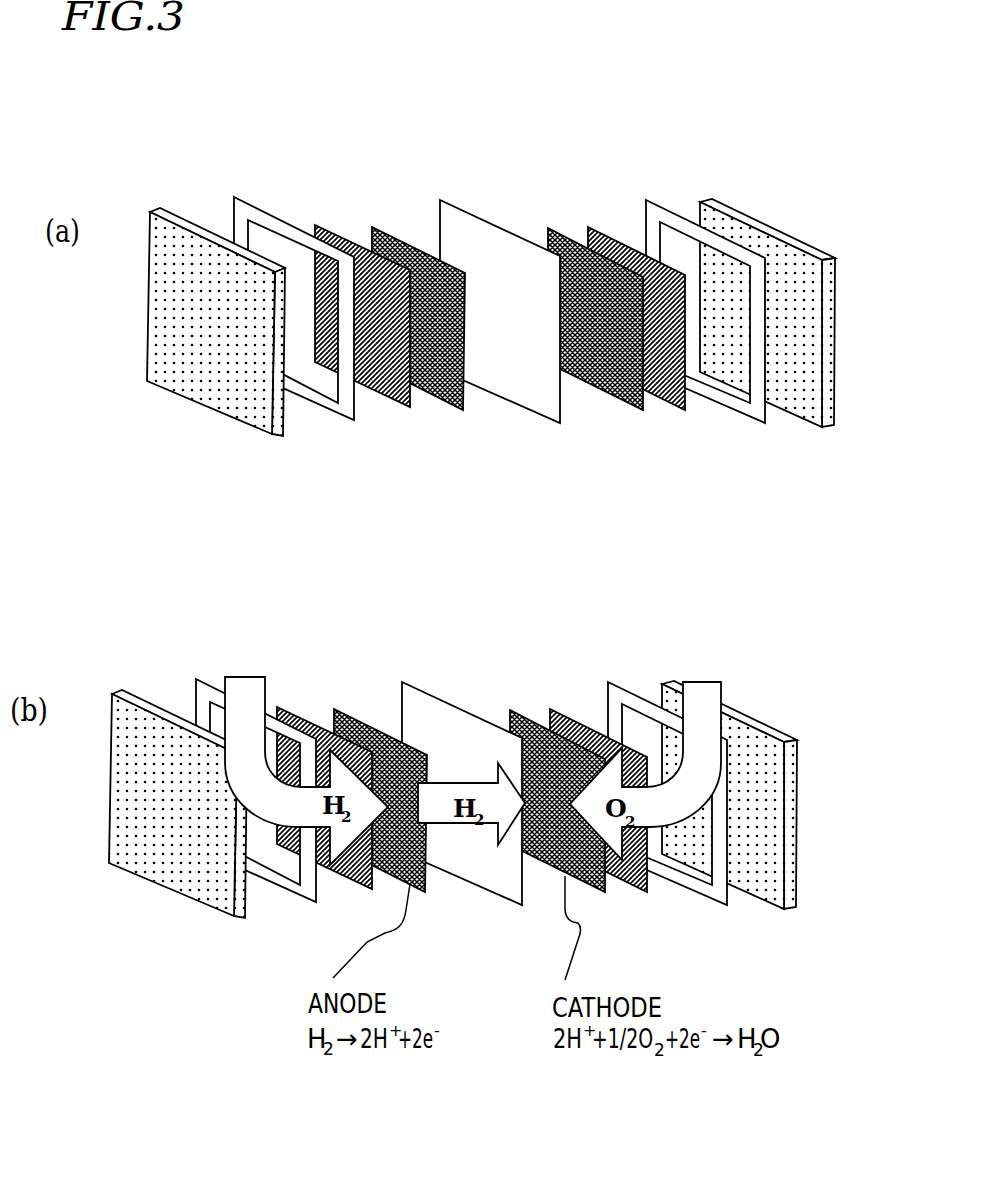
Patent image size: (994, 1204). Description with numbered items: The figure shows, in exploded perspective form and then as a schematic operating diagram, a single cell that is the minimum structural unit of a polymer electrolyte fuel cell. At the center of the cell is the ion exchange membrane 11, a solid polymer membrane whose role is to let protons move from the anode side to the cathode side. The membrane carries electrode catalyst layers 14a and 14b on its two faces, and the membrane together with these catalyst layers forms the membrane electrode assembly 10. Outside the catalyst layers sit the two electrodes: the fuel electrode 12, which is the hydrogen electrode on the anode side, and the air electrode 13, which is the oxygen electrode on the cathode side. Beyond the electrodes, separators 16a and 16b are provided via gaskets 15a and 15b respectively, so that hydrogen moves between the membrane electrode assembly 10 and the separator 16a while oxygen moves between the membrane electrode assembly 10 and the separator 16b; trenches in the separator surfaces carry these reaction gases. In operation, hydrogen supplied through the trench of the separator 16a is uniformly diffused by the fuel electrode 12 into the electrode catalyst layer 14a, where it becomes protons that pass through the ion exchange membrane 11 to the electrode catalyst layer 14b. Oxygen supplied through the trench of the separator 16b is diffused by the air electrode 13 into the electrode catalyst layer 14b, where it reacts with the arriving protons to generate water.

The membrane electrode assembly 10 is at (505, 335).
The ion exchange membrane 11 is at (520, 398).
The fuel electrode 12 is at (380, 387).
The air electrode 13 is at (668, 403).
The electrode catalyst layer 14a is at (438, 393).
The electrode catalyst layer 14b is at (605, 390).
The gasket 15a is at (313, 398).
The gasket 15b is at (729, 405).
The separator 16a is at (202, 378).
The separator 16b is at (805, 400).